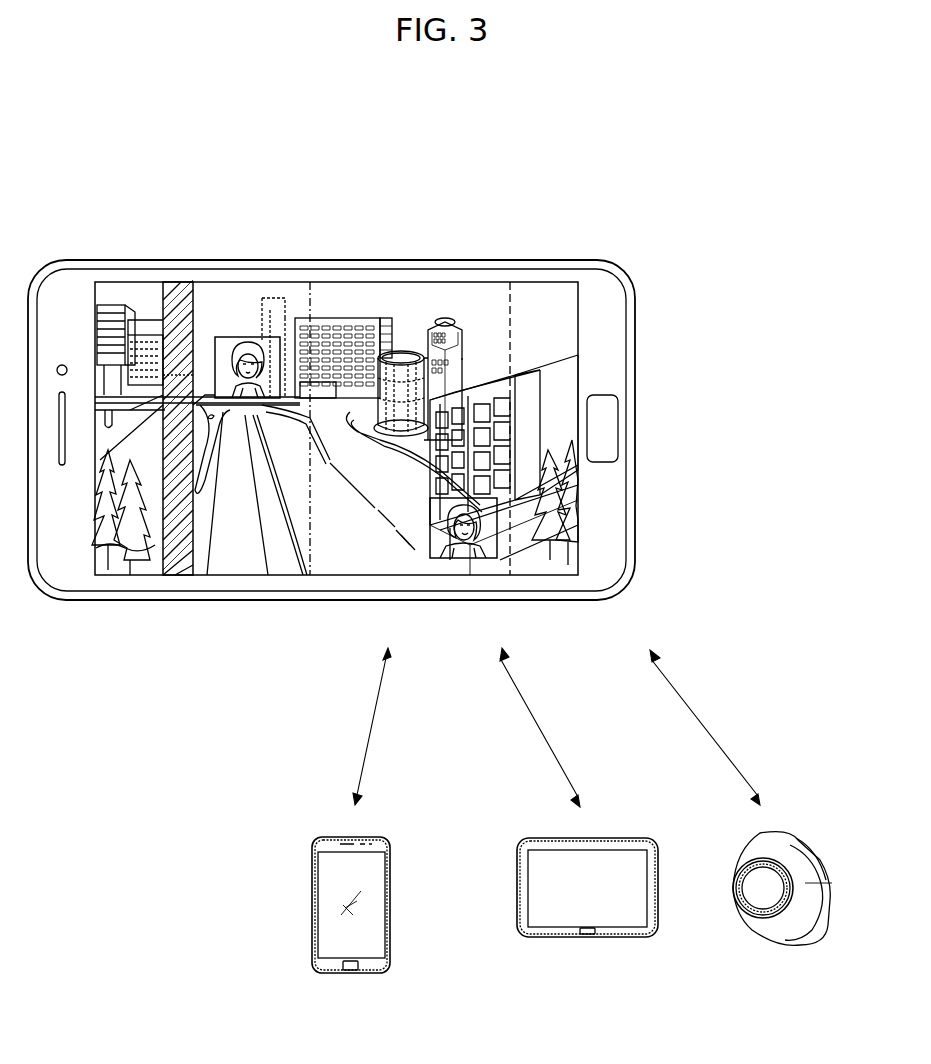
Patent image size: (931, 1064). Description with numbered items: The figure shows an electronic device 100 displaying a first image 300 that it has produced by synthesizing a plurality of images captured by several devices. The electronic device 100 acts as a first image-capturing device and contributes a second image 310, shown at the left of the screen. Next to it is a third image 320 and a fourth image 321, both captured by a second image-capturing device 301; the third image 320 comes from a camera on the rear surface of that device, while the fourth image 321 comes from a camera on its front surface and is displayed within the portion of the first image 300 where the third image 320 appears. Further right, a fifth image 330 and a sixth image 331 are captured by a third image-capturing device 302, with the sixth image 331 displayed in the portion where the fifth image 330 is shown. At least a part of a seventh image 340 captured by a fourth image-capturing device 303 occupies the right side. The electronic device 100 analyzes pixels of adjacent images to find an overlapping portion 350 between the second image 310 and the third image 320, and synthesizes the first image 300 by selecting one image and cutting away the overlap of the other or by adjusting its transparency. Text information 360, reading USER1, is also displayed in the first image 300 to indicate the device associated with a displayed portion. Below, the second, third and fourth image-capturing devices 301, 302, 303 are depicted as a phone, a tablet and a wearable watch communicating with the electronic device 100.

The electronic device 100 is at (636, 430).
The first image 300 is at (97, 305).
The second image-capturing device 301 is at (352, 836).
The third image-capturing device 302 is at (590, 836).
The fourth image-capturing device 303 is at (782, 832).
The second image 310 is at (140, 560).
The third image 320 is at (232, 560).
The fourth image 321 is at (246, 337).
The fifth image 330 is at (358, 560).
The sixth image 331 is at (470, 558).
The seventh image 340 is at (542, 300).
The overlapping portion 350 is at (185, 560).
The text information 360 is at (392, 297).